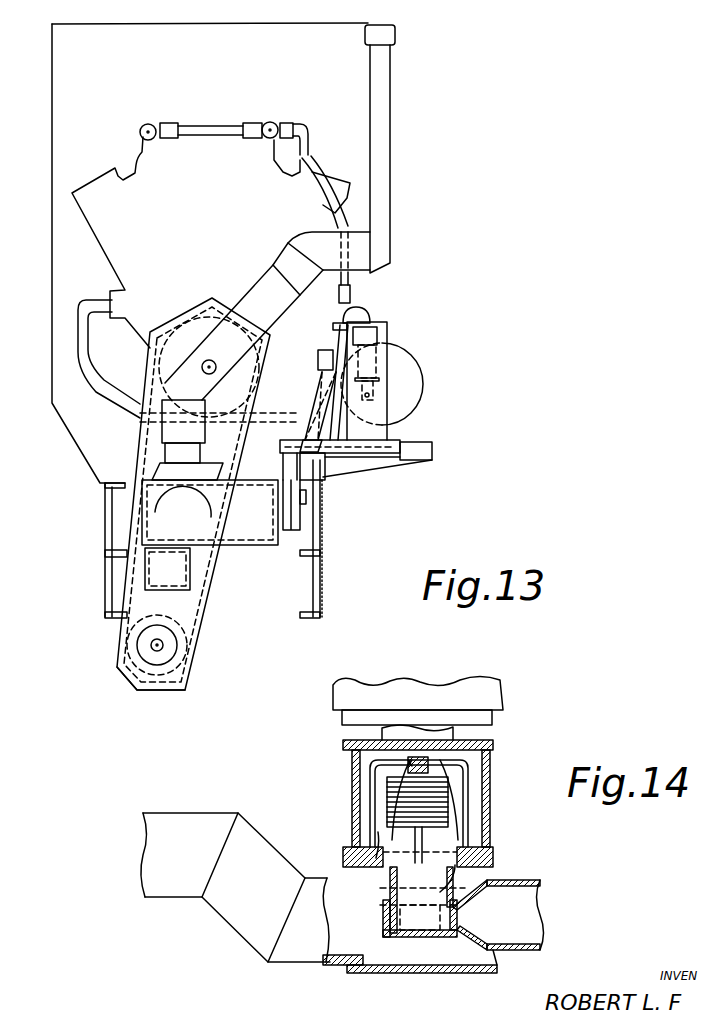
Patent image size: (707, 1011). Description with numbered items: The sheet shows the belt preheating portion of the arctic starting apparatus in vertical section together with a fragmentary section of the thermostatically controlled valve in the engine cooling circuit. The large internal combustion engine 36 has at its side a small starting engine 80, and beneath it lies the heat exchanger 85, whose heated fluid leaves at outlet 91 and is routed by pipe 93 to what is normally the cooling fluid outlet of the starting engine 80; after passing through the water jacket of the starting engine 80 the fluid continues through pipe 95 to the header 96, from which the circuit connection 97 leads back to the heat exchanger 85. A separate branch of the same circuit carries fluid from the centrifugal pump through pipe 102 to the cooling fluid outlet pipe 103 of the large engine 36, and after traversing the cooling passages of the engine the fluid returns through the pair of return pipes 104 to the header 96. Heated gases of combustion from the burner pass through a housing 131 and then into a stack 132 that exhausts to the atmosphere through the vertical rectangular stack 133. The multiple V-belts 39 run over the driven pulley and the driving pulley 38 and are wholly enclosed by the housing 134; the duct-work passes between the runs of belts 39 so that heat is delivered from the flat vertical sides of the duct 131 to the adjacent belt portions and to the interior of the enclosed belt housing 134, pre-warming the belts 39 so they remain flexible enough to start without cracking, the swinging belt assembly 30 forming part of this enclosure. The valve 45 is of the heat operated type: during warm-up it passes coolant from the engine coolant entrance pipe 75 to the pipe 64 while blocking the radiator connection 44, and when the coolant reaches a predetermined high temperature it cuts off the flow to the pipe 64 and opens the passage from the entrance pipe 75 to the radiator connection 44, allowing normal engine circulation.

In FIG. 13, the swing arm assembly 30 is at (168, 672).
In FIG. 13, the large internal combustion engine 36 is at (225, 188).
In FIG. 13, the driving pulley 38 is at (192, 330).
In FIG. 13, the multiple V-belts 39 is at (198, 616).
In FIG. 14, the radiator connection 44 is at (180, 888).
In FIG. 14, the valve 45 is at (418, 972).
In FIG. 14, the pipe 64 is at (523, 917).
In FIG. 14, the engine coolant entrance pipe 75 is at (493, 690).
In FIG. 13, the small internal combustion engine 80 is at (387, 364).
In FIG. 13, the heat exchanger 85 is at (259, 537).
In FIG. 13, the outlet 91 is at (306, 496).
In FIG. 13, the pipe 93 is at (354, 311).
In FIG. 13, the pipe 95 is at (316, 392).
In FIG. 13, the header 96 is at (377, 454).
In FIG. 13, the circuit connection 97 is at (291, 520).
In FIG. 13, the pipe 102 is at (322, 187).
In FIG. 13, the cooling fluid outlet pipe 103 is at (273, 124).
In FIG. 13, the return pipes 104 is at (108, 385).
In FIG. 13, the housing 131 is at (185, 567).
In FIG. 13, the stack 132 is at (268, 283).
In FIG. 13, the vertical rectangular stack 133 is at (381, 75).
In FIG. 13, the housing 134 is at (115, 670).